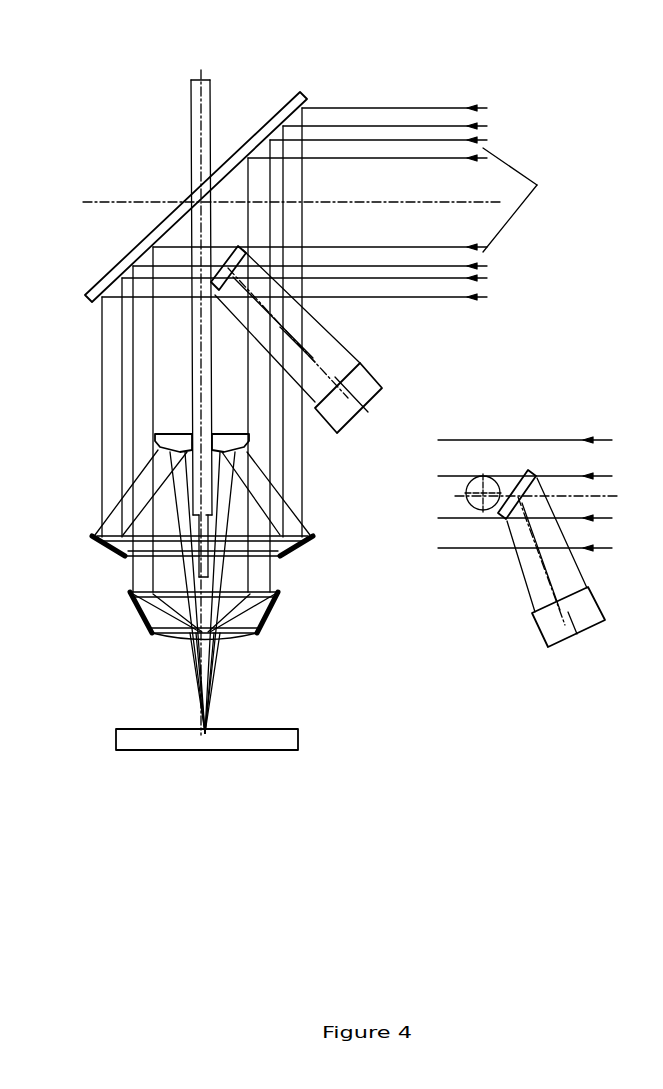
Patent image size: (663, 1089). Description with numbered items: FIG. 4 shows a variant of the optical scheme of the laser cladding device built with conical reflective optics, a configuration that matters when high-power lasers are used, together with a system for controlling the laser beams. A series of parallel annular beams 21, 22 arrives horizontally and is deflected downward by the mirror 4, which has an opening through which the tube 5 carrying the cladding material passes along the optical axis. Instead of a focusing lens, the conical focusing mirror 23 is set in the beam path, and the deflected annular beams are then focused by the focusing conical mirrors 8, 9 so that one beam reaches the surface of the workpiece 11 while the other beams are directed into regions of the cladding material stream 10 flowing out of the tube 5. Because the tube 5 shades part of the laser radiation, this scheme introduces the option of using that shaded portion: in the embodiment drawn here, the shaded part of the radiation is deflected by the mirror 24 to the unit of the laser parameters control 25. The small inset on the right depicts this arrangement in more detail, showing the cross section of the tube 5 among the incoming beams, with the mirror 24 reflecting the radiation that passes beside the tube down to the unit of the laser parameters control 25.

The mirror 4 is at (288, 100).
The tube for cladding material 5 is at (197, 100).
The focusing conical mirror 8 is at (97, 538).
The focusing conical mirror 9 is at (133, 617).
The cladding material stream 10 is at (213, 658).
The workpiece 11 is at (285, 742).
The annular beam 21 is at (562, 185).
The annular beam 22 is at (483, 288).
The conical focusing mirror 23 is at (158, 443).
The mirror 24 is at (240, 255).
The unit of laser parameters control 25 is at (372, 390).